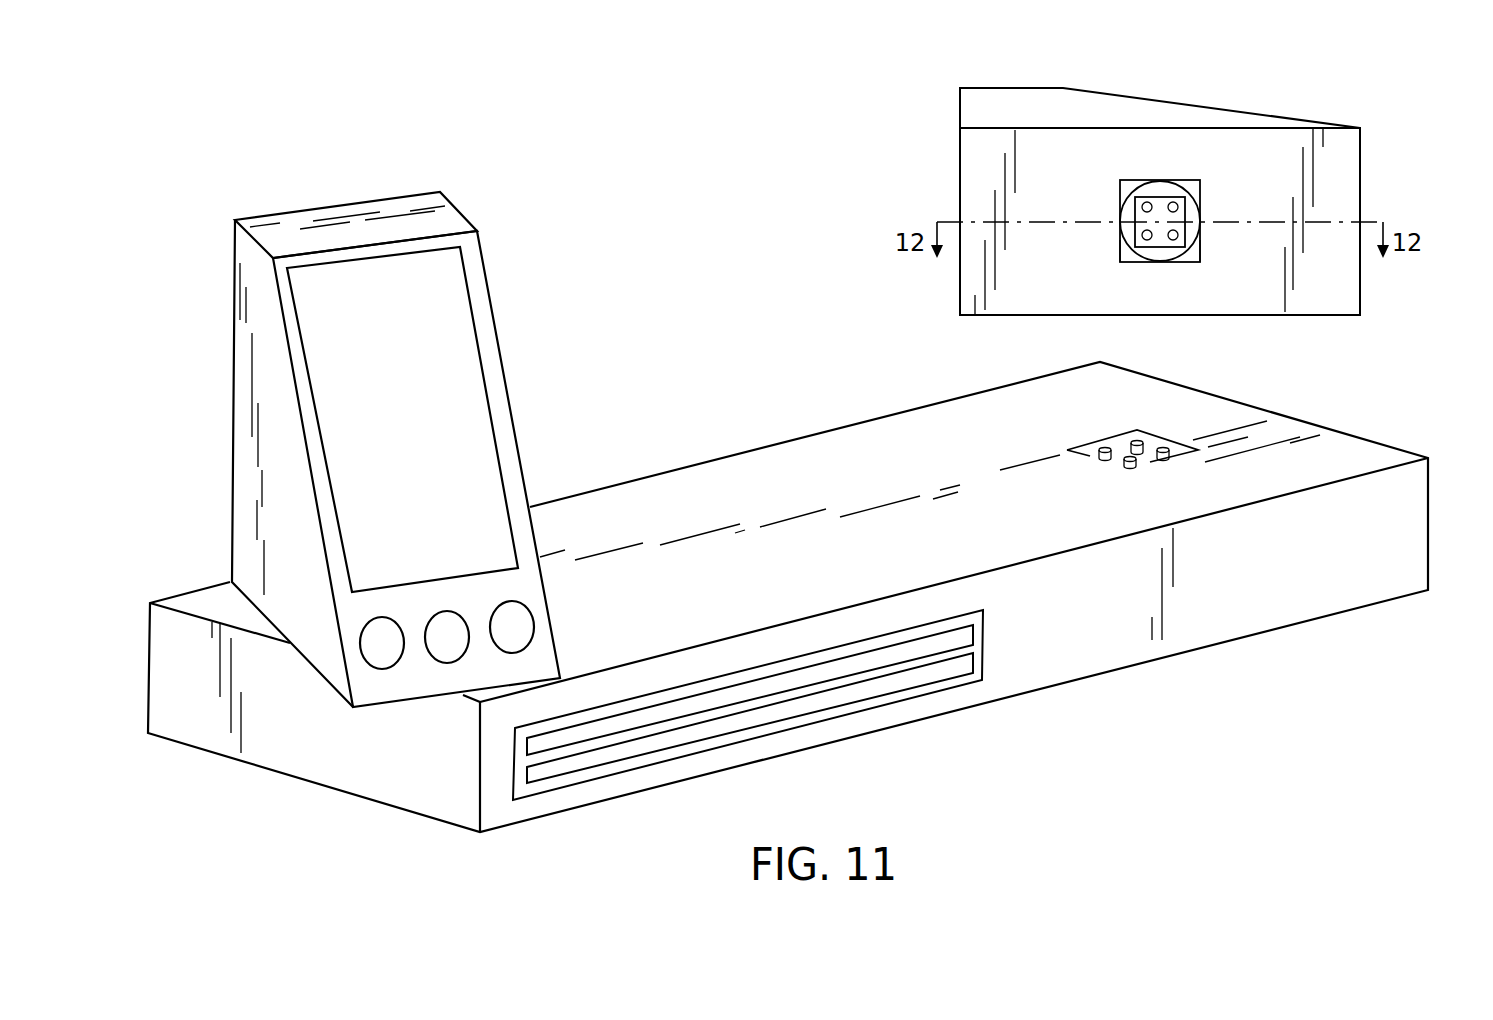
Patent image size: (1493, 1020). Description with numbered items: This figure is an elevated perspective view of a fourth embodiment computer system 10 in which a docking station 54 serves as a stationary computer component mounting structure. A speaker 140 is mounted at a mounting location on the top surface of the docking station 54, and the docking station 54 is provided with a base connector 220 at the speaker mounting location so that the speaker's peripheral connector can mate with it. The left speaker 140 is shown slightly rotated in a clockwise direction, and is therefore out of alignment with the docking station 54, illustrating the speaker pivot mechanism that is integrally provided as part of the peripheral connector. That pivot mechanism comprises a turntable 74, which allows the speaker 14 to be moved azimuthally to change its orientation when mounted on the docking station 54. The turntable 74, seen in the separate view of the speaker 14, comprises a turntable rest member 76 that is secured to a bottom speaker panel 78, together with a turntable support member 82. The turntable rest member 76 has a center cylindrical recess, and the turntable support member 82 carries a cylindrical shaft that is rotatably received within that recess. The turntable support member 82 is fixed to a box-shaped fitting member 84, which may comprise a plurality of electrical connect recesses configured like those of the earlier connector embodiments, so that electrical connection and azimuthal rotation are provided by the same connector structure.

The computer system 10 is at (657, 146).
The speaker 14 is at (1350, 161).
The speaker 140 is at (482, 289).
The docking station 54 is at (1422, 532).
The turntable 74 is at (1183, 174).
The turntable rest member 76 is at (1191, 257).
The bottom speaker panel 78 is at (1118, 252).
The turntable support member 82 is at (1195, 223).
The box-shaped fitting member 84 is at (1178, 220).
The base connector 220 is at (1150, 463).